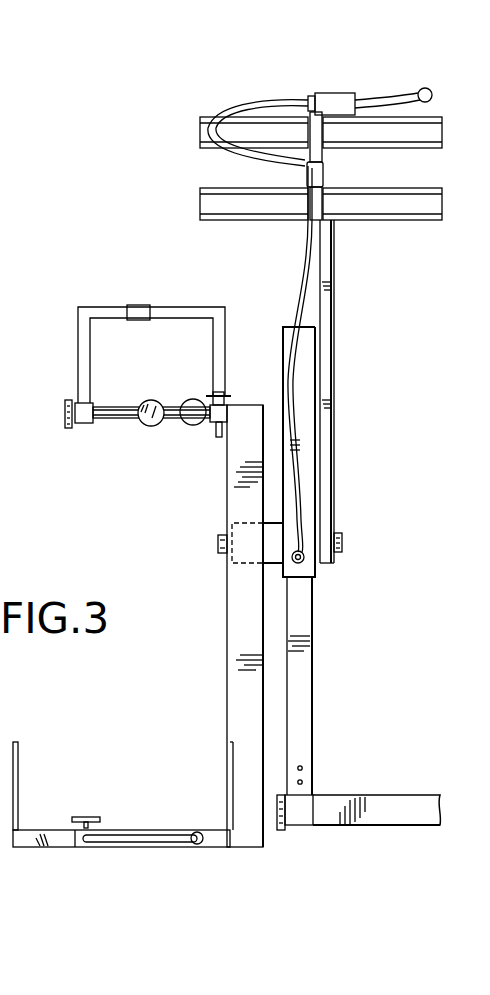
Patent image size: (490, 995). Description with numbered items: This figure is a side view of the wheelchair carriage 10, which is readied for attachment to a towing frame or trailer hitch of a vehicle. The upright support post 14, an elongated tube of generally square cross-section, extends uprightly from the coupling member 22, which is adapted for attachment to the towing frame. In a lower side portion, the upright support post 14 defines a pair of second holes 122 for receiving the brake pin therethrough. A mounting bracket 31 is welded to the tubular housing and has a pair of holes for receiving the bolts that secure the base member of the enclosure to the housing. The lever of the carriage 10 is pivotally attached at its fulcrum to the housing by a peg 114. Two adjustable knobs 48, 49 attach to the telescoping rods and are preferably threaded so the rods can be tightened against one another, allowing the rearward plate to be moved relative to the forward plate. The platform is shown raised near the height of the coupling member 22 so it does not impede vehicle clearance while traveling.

The wheelchair carriage 10 is at (376, 314).
The upright support post 14 is at (303, 672).
The coupling member 22 is at (378, 812).
The mounting bracket 31 is at (268, 555).
The adjustable knob 48 is at (204, 841).
The adjustable knob 49 is at (95, 818).
The peg 114 is at (343, 544).
The second holes 122 is at (303, 768).